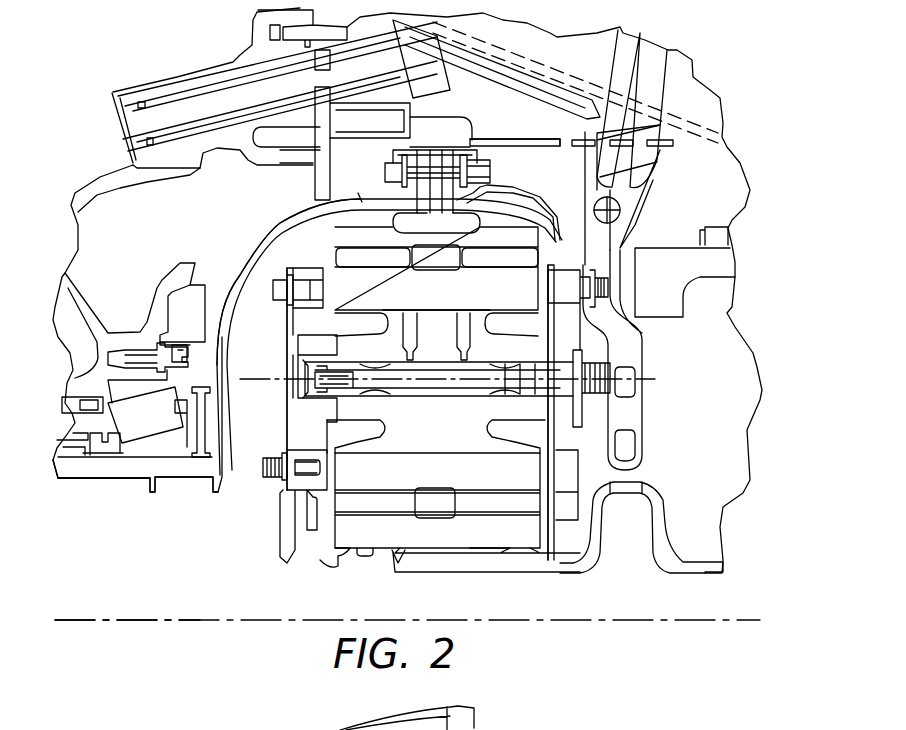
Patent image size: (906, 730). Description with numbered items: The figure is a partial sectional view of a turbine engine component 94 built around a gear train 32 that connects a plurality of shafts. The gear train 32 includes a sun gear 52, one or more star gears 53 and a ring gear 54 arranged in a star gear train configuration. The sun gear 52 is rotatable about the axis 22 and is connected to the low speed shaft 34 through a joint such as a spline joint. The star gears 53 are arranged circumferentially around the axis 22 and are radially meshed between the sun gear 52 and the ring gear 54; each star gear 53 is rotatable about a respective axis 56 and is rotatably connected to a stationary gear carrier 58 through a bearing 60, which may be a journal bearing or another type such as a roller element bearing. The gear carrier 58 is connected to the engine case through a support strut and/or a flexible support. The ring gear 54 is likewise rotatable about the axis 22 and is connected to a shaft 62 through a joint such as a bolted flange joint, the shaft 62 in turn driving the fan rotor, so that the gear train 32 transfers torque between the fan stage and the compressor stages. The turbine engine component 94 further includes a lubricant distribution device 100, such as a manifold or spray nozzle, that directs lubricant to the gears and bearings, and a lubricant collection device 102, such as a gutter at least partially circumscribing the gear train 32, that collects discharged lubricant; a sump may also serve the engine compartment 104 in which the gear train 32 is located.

The axis 22 is at (74, 620).
The gear train 32 is at (247, 537).
The low speed shaft 34 is at (705, 572).
The sun gear 52 is at (327, 490).
The star gears 53 is at (515, 477).
The ring gear 54 is at (515, 235).
The axis 56 is at (640, 376).
The stationary gear carrier 58 is at (280, 560).
The bearing 60 is at (633, 360).
The shaft 62 is at (72, 482).
The turbine engine component 94 is at (303, 252).
The lubricant distribution device 100 is at (645, 447).
The lubricant collection device 102 is at (470, 118).
The engine compartment 104 is at (204, 530).